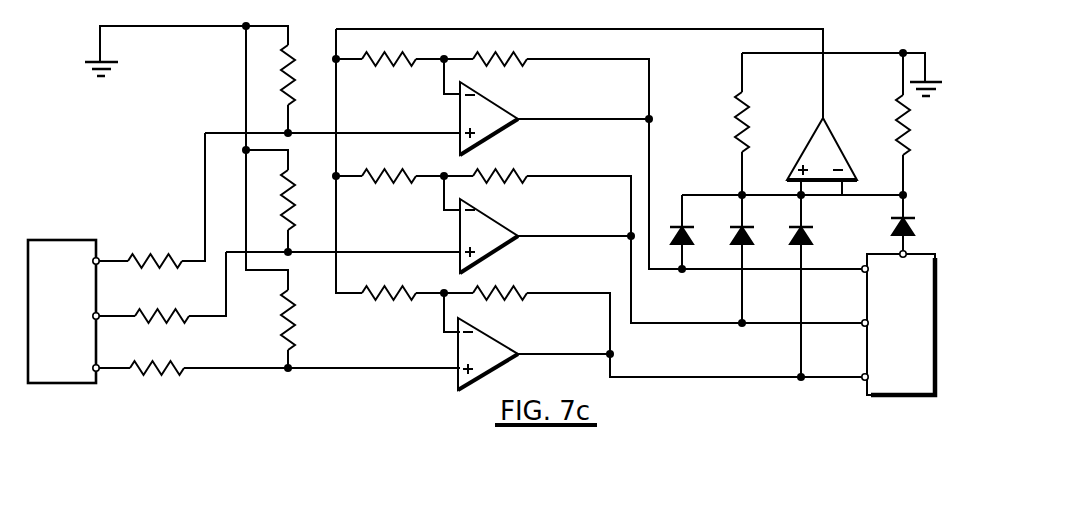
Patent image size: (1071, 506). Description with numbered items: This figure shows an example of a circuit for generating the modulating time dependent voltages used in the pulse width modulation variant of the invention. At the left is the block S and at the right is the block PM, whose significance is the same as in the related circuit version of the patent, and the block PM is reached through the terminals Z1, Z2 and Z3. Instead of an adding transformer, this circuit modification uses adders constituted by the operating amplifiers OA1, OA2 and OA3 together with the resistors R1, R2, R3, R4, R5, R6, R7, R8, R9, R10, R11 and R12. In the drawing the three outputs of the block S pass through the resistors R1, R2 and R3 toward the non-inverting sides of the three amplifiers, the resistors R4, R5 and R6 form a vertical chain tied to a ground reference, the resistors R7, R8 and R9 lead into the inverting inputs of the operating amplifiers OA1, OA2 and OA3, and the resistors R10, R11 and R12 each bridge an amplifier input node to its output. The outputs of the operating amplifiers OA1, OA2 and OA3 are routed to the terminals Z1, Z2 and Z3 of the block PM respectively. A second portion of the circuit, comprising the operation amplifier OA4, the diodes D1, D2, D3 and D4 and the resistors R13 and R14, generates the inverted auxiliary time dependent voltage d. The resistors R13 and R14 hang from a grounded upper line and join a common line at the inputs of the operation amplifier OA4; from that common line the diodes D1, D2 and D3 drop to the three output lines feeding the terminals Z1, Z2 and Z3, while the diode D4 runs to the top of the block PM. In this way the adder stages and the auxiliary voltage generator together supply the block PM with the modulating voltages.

The block S is at (62, 311).
The resistor R1 is at (178, 252).
The resistor R2 is at (180, 310).
The resistor R3 is at (176, 359).
The resistor R4 is at (298, 72).
The resistor R5 is at (296, 190).
The resistor R6 is at (297, 310).
The resistor R7 is at (376, 63).
The resistor R8 is at (377, 179).
The resistor R9 is at (377, 297).
The resistor R10 is at (514, 57).
The resistor R11 is at (530, 152).
The resistor R12 is at (512, 286).
The resistor R13 is at (736, 128).
The resistor R14 is at (893, 104).
The operating amplifier OA1 is at (507, 103).
The operating amplifier OA2 is at (507, 220).
The operating amplifier OA3 is at (505, 339).
The operation amplifier OA4 is at (800, 154).
The diode D1 is at (709, 226).
The diode D2 is at (770, 232).
The diode D3 is at (828, 232).
The diode D4 is at (894, 222).
The terminal Z1 is at (864, 272).
The terminal Z2 is at (863, 326).
The terminal Z3 is at (863, 380).
The block PM is at (901, 324).